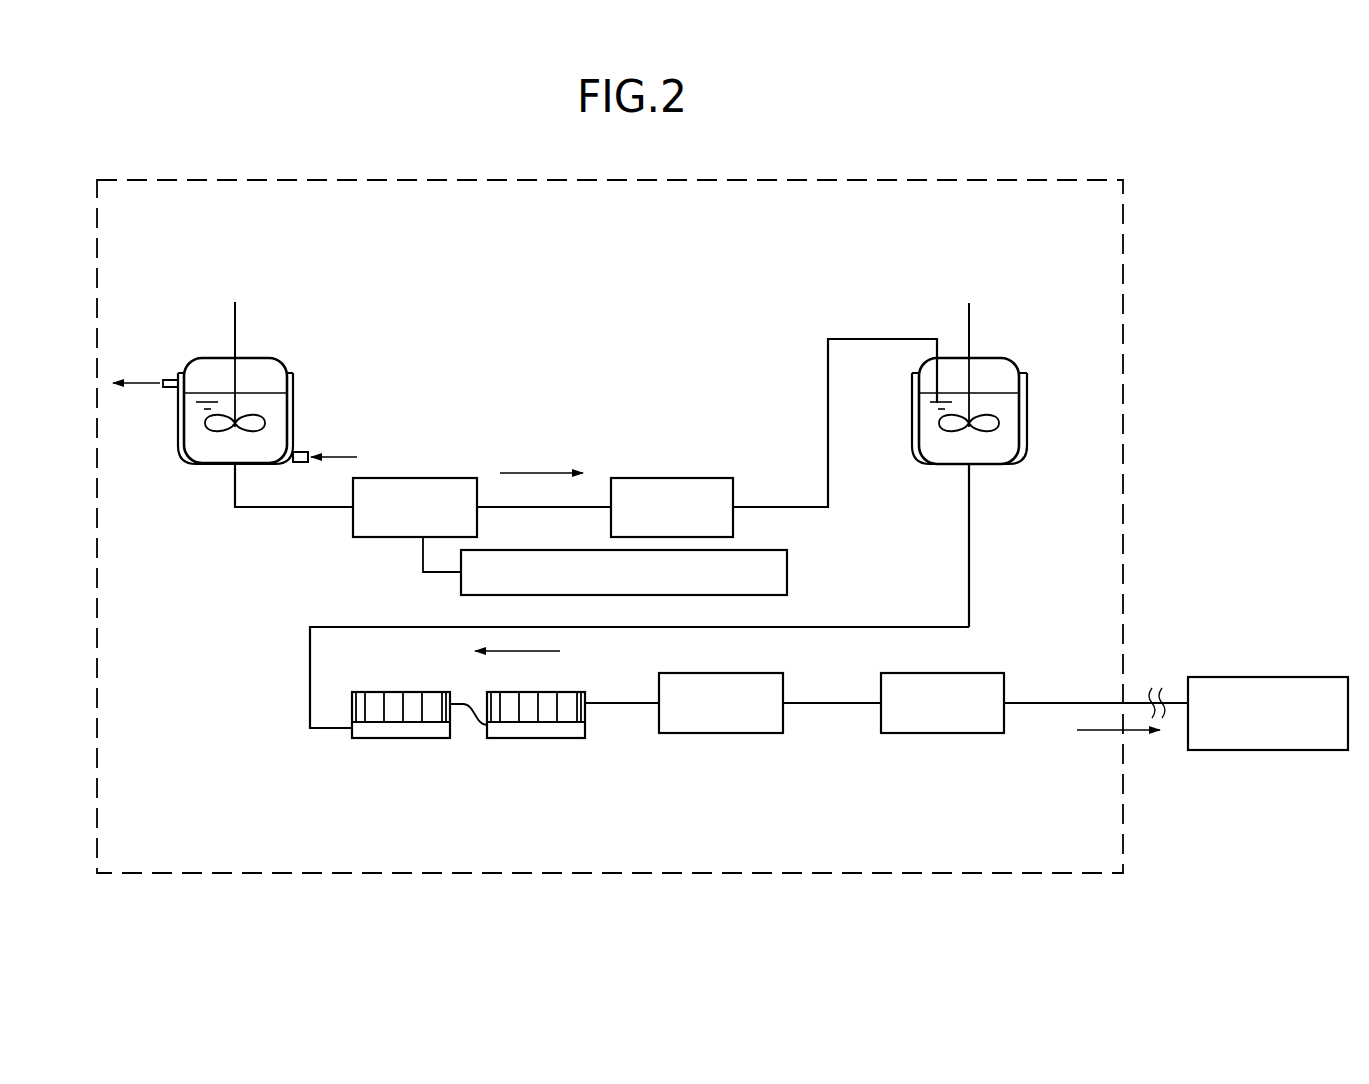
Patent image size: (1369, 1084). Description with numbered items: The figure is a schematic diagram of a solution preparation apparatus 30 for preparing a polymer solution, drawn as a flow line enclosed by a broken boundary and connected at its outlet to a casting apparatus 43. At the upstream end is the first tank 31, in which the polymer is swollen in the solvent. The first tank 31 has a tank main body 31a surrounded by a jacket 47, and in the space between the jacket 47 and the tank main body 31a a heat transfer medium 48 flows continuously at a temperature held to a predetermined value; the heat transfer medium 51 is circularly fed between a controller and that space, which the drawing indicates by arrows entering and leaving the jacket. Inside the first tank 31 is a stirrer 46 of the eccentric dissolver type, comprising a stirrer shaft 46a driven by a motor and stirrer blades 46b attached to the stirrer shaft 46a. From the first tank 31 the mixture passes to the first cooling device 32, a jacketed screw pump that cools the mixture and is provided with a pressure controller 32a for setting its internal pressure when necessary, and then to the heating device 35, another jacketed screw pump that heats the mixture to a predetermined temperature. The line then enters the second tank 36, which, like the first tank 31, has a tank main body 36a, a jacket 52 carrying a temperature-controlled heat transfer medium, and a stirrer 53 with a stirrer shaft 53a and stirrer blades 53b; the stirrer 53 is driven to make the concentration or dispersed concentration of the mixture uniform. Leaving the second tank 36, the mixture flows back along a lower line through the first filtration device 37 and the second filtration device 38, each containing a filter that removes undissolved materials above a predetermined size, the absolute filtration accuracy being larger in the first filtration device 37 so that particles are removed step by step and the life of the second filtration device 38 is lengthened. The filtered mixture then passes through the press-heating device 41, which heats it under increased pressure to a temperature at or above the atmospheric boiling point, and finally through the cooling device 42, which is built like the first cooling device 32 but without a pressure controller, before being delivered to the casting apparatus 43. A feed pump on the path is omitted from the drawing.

The solution preparation apparatus 30 is at (546, 875).
The first tank 31 is at (258, 343).
The tank main body 31a is at (185, 430).
The first cooling device 32 is at (412, 477).
The pressure controller 32a is at (787, 573).
The heating device 35 is at (630, 477).
The second tank 36 is at (995, 350).
The tank main body 36a is at (1021, 408).
The first filtration device 37 is at (375, 740).
The second filtration device 38 is at (512, 740).
The press-heating device 41 is at (683, 735).
The cooling device 42 is at (905, 735).
The casting apparatus 43 is at (1207, 677).
The stirrer 46 is at (233, 322).
The stirrer shaft 46a is at (233, 333).
The stirrer blades 46b is at (256, 428).
The jacket 47 is at (294, 380).
The heat transfer medium 48 is at (244, 401).
The heat transfer medium 51 is at (294, 462).
The jacket 52 is at (1028, 383).
The stirrer 53 is at (967, 322).
The stirrer shaft 53a is at (967, 334).
The stirrer blades 53b is at (992, 426).